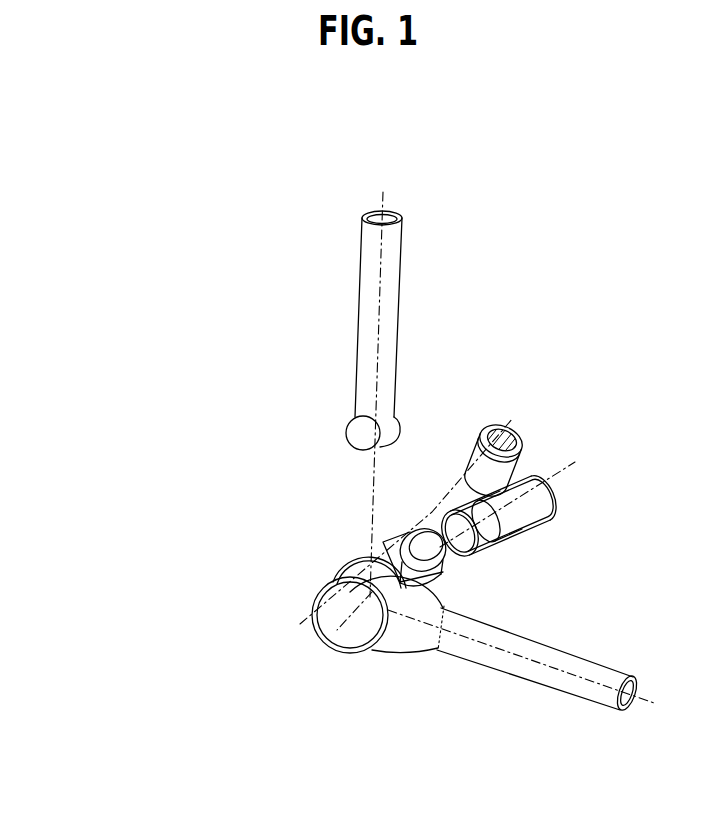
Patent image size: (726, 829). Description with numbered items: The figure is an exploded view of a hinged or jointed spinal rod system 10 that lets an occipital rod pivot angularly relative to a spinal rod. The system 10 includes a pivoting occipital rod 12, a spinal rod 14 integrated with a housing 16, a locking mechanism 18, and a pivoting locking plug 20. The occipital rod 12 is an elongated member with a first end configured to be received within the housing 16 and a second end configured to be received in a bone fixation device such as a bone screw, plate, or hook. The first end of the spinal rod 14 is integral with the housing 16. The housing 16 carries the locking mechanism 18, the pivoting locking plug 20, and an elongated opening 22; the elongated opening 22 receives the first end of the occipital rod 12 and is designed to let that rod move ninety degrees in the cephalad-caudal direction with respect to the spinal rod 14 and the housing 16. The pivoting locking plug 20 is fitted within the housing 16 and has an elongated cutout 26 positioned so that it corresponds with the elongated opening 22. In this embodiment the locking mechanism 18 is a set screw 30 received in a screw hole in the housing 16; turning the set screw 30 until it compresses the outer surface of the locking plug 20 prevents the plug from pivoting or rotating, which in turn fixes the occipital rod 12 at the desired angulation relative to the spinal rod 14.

The hinged rod system 10 is at (569, 151).
The occipital rod 12 is at (395, 376).
The spinal rod 14 is at (518, 677).
The housing 16 is at (313, 620).
The locking mechanism 18 is at (413, 525).
The pivoting locking plug 20 is at (527, 530).
The elongated opening 22 is at (352, 558).
The elongated cutout 26 is at (493, 498).
The set screw 30 is at (522, 444).